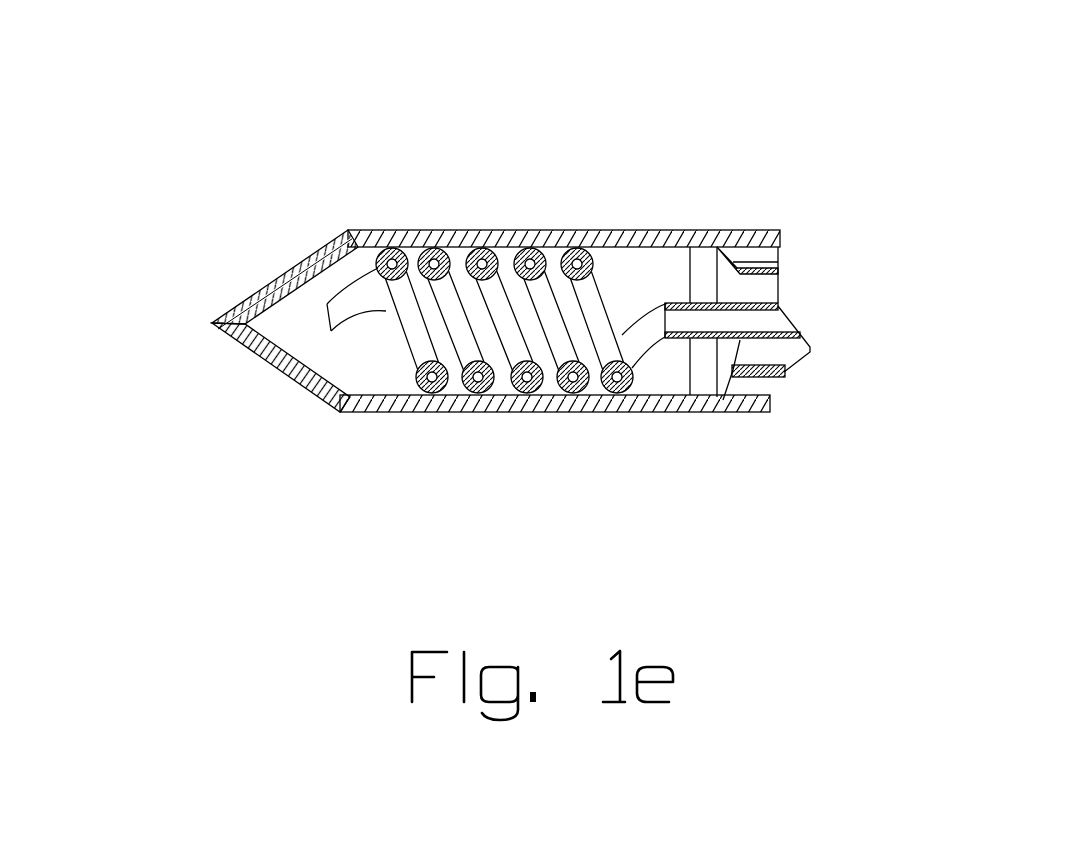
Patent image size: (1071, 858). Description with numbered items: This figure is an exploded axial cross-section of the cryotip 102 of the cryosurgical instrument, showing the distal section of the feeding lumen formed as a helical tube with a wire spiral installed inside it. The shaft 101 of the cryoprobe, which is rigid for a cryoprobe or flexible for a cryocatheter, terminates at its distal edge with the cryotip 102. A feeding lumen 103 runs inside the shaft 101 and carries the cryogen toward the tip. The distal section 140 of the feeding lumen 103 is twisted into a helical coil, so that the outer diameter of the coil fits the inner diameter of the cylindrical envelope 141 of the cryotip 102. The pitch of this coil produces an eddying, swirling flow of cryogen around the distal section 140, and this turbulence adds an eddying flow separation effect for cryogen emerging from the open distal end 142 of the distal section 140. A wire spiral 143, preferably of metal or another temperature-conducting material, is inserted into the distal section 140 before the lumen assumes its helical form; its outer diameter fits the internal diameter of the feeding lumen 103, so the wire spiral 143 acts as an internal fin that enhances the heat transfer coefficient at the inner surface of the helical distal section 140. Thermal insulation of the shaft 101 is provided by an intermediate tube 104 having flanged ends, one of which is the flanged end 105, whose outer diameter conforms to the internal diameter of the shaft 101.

The shaft 101 is at (780, 230).
The cryotip 102 is at (465, 440).
The feeding lumen 103 is at (735, 373).
The intermediate tube 104 is at (783, 377).
The flanged end 105 is at (757, 230).
The distal section 140 is at (390, 232).
The cylindrical envelope 141 is at (581, 231).
The distal end 142 is at (327, 316).
The wire spiral 143 is at (478, 232).